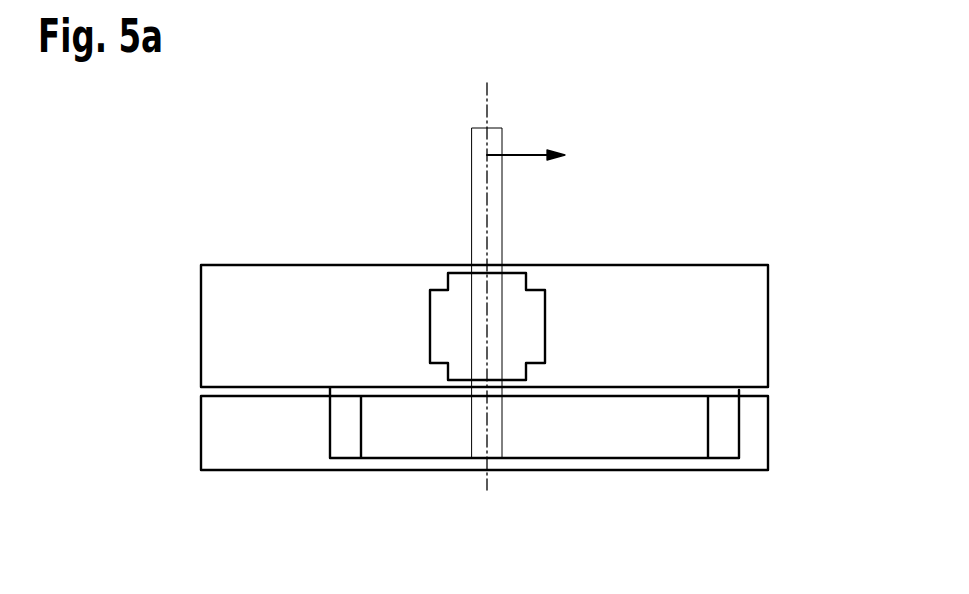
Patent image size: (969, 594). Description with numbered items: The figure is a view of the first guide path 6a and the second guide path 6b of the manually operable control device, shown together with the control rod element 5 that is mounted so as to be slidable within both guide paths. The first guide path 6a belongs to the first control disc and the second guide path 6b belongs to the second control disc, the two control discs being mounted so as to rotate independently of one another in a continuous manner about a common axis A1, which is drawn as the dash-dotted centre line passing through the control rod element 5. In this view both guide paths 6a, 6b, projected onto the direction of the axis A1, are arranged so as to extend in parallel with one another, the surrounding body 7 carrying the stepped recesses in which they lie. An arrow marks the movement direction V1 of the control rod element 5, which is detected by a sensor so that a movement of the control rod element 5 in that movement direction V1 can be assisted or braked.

The control rod element 5 is at (480, 187).
The first guide path 6a is at (537, 318).
The second guide path 6b is at (518, 435).
The tool halves 7 is at (753, 408).
The common axis A1 is at (485, 93).
The movement direction V1 is at (527, 154).